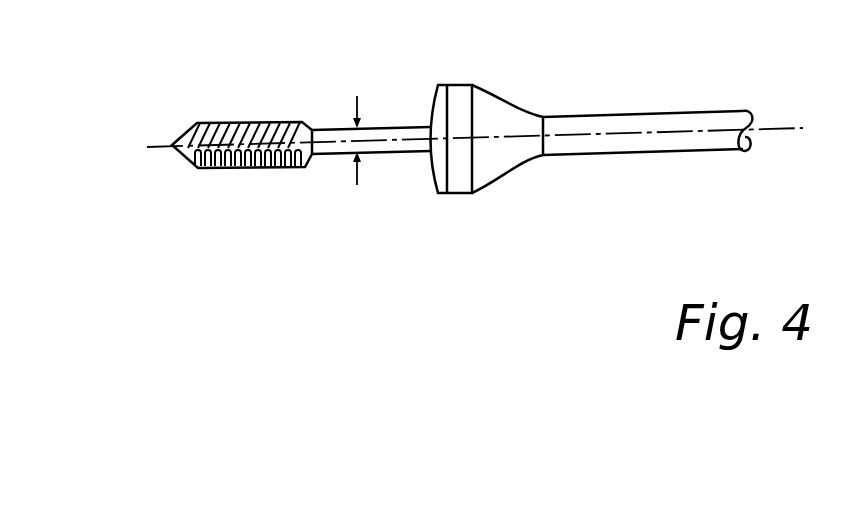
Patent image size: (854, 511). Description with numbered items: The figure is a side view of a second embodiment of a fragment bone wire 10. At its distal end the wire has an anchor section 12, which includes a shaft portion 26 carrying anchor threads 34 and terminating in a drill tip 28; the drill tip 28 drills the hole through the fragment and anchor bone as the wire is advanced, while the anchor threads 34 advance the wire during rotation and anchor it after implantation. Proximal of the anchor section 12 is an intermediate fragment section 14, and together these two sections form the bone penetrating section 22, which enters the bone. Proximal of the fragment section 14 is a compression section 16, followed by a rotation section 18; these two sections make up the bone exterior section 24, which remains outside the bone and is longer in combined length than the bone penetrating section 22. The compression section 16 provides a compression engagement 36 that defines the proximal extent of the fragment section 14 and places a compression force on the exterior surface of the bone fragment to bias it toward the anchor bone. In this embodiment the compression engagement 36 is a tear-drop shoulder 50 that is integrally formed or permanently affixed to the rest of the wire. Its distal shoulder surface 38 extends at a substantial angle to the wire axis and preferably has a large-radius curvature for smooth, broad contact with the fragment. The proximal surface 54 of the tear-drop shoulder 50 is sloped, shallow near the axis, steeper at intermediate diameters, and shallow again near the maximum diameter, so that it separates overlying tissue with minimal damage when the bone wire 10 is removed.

The fragment bone wire 10 is at (128, 84).
The anchor section 12 is at (211, 160).
The intermediate fragment section 14 is at (372, 151).
The compression section 16 is at (511, 135).
The rotation section 18 is at (753, 192).
The bone penetrating section 22 is at (437, 262).
The bone exterior section 24 is at (755, 251).
The shaft portion 26 is at (254, 113).
The drill tip 28 is at (173, 147).
The anchor threads 34 is at (257, 137).
The compression engagement 36 is at (458, 107).
The shoulder surface 38 is at (479, 106).
The tear-drop shoulder 50 is at (432, 107).
The proximal surface 54 is at (528, 112).